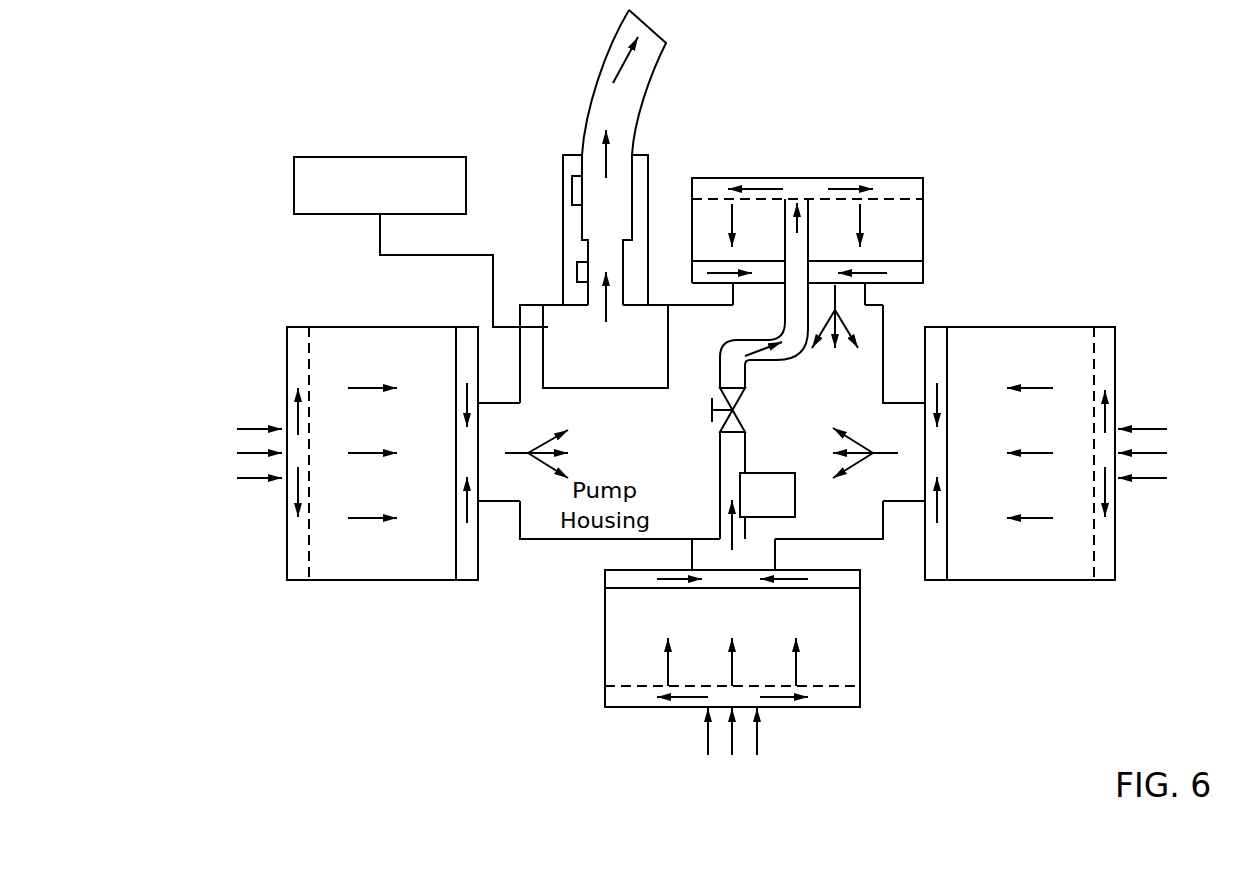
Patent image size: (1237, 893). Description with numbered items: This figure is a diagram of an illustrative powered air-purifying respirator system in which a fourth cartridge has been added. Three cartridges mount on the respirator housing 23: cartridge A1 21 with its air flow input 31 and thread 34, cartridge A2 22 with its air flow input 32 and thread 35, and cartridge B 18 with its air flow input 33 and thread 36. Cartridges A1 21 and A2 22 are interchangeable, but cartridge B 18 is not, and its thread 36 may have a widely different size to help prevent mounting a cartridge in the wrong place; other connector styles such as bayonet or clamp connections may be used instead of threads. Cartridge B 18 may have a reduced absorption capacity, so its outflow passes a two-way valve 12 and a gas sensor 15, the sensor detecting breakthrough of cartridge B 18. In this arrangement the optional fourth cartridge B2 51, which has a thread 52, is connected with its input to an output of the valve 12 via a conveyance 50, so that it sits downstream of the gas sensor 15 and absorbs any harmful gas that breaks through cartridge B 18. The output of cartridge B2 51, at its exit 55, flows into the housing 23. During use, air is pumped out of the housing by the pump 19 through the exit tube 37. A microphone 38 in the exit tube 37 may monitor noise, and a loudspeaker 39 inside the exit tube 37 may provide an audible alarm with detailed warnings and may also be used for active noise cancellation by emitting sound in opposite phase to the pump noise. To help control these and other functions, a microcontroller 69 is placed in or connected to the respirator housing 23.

The two-way valve 12 is at (742, 398).
The gas sensor 15 is at (790, 503).
The cartridge 18 is at (612, 637).
The pump 19 is at (603, 380).
The cartridge 21 is at (383, 333).
The cartridge 22 is at (1023, 335).
The respirator housing 23 is at (885, 322).
The air flow input 31 is at (252, 410).
The air flow input 32 is at (1150, 418).
The air flow input 33 is at (693, 740).
The thread 34 is at (515, 507).
The thread 35 is at (897, 493).
The thread 36 is at (693, 556).
The exit tube 37 is at (629, 97).
The microphone 38 is at (577, 272).
The loudspeaker 39 is at (572, 193).
The conveyance 50 is at (760, 340).
The cartridge 51 is at (803, 180).
The thread 52 is at (852, 296).
The exit 55 is at (835, 302).
The microcontroller 69 is at (380, 157).